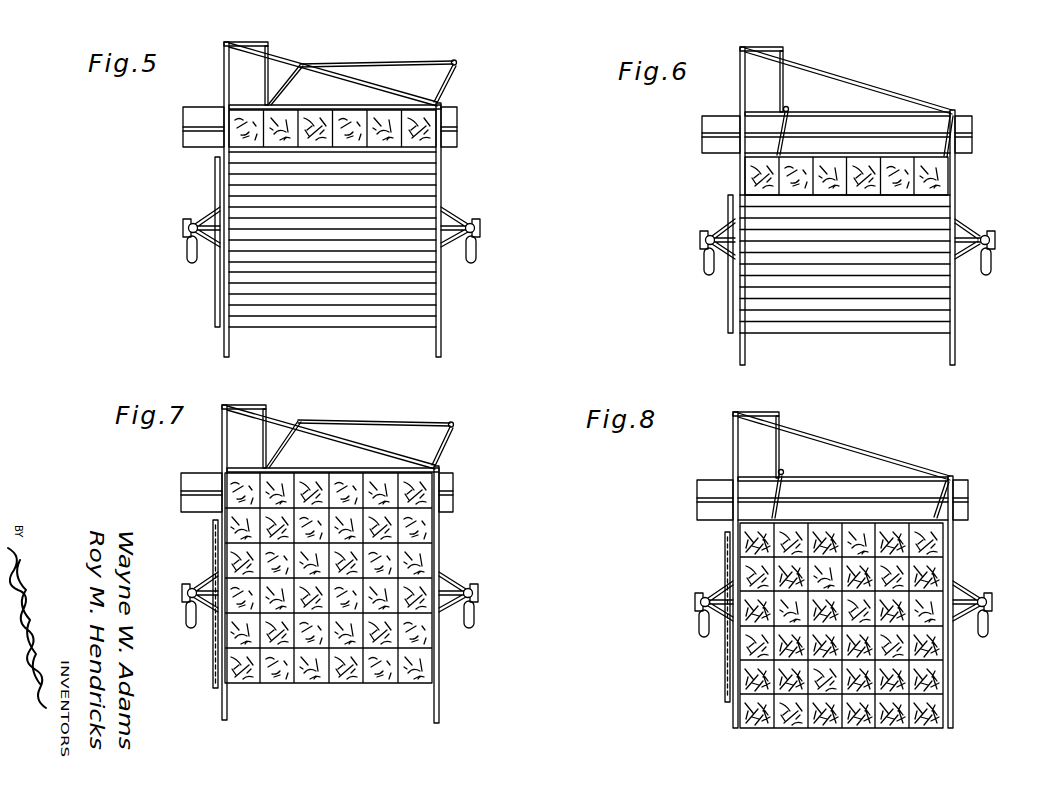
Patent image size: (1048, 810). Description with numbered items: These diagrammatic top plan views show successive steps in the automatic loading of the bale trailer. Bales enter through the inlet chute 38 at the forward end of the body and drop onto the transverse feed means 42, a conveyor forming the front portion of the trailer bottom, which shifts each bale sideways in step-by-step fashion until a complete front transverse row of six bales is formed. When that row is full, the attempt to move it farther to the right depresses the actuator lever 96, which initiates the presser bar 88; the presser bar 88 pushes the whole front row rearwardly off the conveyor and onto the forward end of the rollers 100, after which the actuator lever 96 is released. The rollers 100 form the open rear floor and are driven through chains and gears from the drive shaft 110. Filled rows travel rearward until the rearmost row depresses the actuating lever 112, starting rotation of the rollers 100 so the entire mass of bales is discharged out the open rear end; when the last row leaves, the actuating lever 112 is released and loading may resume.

In FIG. 5, the inlet chute 38 is at (240, 73).
In FIG. 7, the inlet chute 38 is at (240, 434).
In FIG. 6, the inlet chute 38 is at (755, 75).
In FIG. 8, the inlet chute 38 is at (753, 444).
In FIG. 5, the transverse feed means 42 is at (176, 147).
In FIG. 7, the transverse feed means 42 is at (180, 472).
In FIG. 6, the transverse feed means 42 is at (720, 163).
In FIG. 8, the transverse feed means 42 is at (709, 530).
In FIG. 5, the presser bar 88 is at (378, 62).
In FIG. 7, the presser bar 88 is at (370, 421).
In FIG. 6, the presser bar 88 is at (837, 157).
In FIG. 8, the presser bar 88 is at (835, 520).
In FIG. 5, the actuator lever 96 is at (440, 138).
In FIG. 7, the actuator lever 96 is at (433, 503).
In FIG. 6, the actuator lever 96 is at (953, 155).
In FIG. 8, the actuator lever 96 is at (943, 515).
In FIG. 6, the rollers 100 is at (840, 312).
In FIG. 5, the drive shaft 110 is at (338, 293).
In FIG. 5, the actuating lever 112 is at (223, 318).
In FIG. 7, the actuating lever 112 is at (222, 688).
In FIG. 6, the actuating lever 112 is at (738, 326).
In FIG. 8, the actuating lever 112 is at (740, 712).